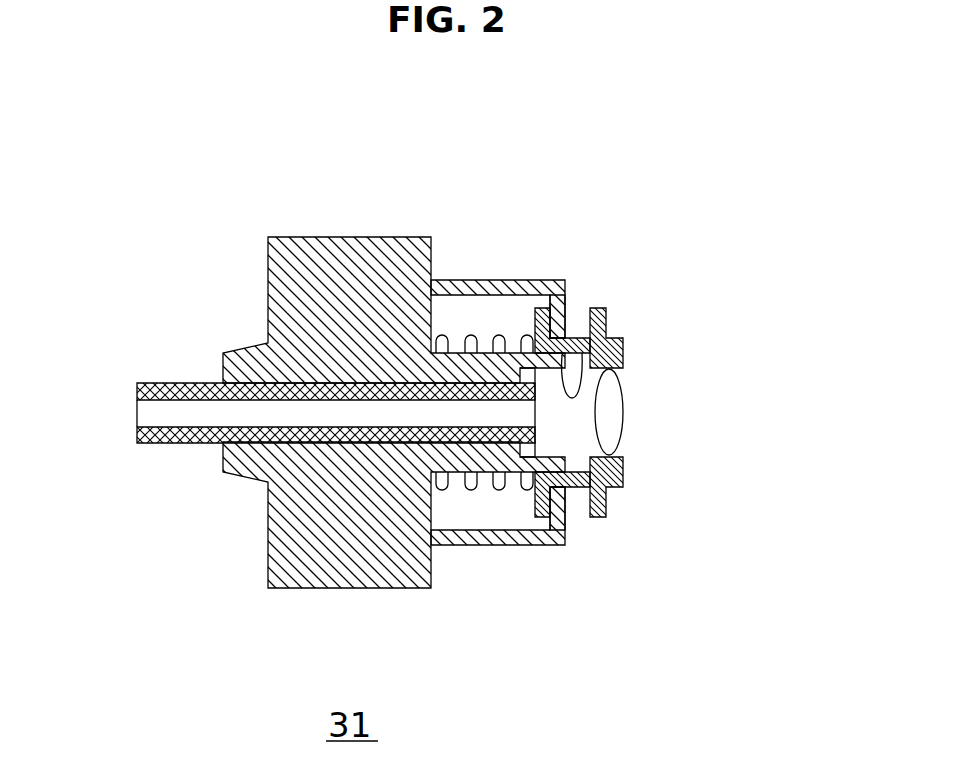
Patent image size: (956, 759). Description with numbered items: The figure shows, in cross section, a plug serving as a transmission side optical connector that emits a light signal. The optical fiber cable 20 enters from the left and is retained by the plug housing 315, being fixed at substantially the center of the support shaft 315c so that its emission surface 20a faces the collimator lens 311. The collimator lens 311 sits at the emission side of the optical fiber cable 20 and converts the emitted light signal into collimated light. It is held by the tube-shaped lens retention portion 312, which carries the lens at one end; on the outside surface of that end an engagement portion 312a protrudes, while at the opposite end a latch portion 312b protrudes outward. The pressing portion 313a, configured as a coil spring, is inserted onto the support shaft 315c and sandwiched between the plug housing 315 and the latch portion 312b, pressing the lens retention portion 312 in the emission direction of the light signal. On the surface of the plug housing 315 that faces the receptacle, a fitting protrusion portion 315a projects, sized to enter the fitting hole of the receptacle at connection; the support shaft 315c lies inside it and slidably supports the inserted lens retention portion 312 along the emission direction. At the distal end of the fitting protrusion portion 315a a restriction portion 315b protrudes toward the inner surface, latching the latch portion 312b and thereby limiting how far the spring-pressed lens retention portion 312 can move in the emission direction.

The optical fiber cable 20 is at (178, 382).
The emission surface 20a is at (538, 420).
The collimator lens 311 is at (608, 412).
The lens retention portion 312 is at (646, 353).
The engagement portion 312a is at (608, 313).
The latch portion 312b is at (543, 307).
The pressing portion 313a is at (480, 337).
The plug housing 315 is at (253, 268).
The fitting protrusion portion 315a is at (490, 545).
The restriction portion 315b is at (548, 487).
The support shaft 315c is at (578, 353).